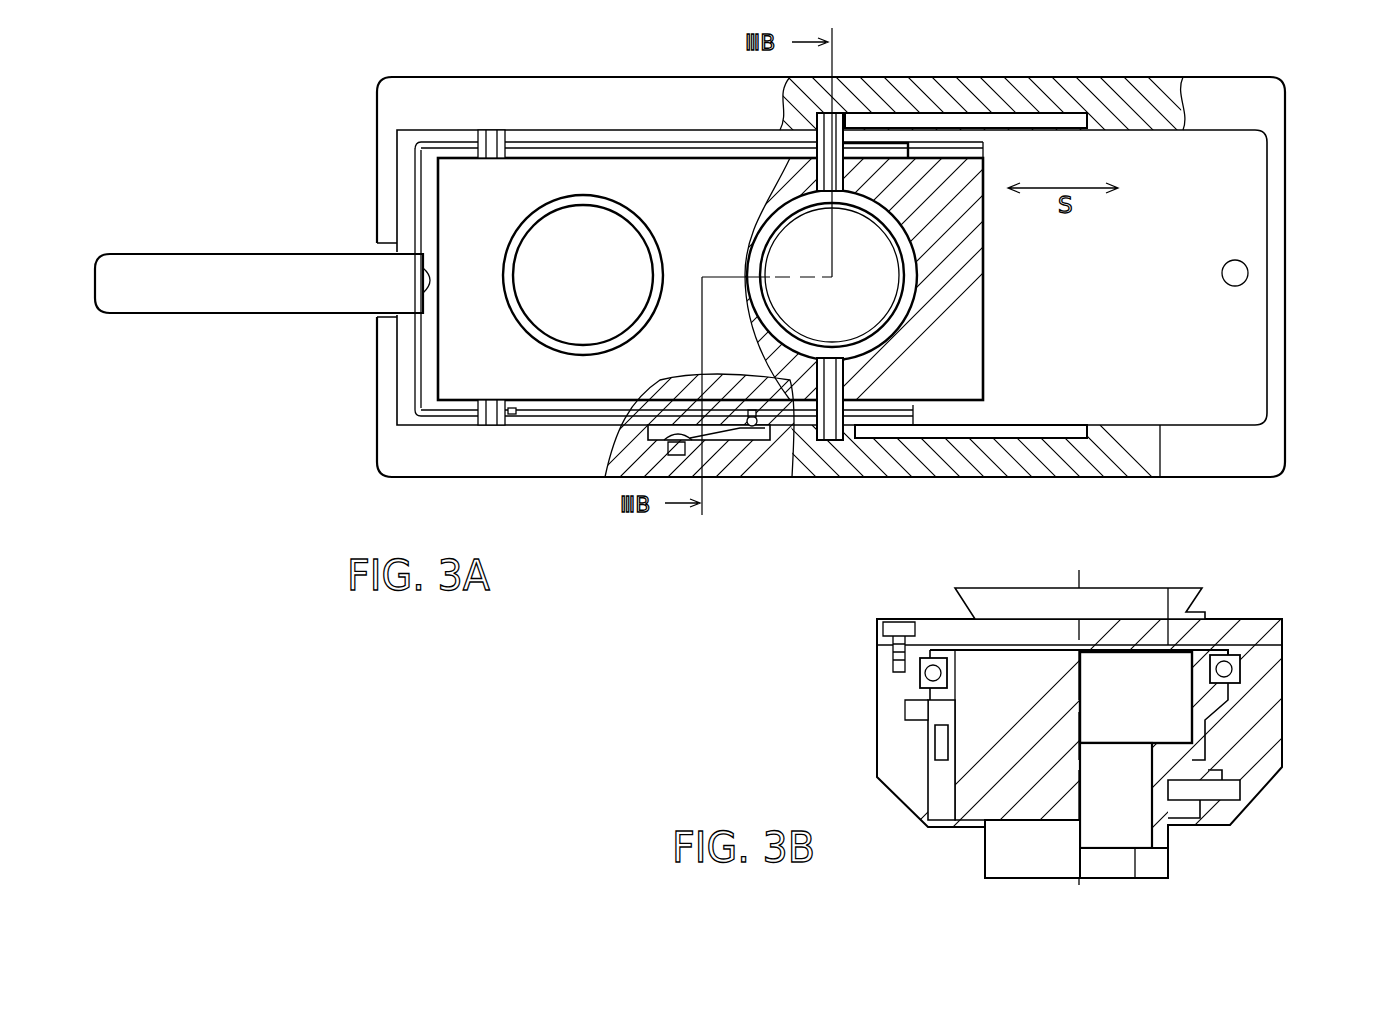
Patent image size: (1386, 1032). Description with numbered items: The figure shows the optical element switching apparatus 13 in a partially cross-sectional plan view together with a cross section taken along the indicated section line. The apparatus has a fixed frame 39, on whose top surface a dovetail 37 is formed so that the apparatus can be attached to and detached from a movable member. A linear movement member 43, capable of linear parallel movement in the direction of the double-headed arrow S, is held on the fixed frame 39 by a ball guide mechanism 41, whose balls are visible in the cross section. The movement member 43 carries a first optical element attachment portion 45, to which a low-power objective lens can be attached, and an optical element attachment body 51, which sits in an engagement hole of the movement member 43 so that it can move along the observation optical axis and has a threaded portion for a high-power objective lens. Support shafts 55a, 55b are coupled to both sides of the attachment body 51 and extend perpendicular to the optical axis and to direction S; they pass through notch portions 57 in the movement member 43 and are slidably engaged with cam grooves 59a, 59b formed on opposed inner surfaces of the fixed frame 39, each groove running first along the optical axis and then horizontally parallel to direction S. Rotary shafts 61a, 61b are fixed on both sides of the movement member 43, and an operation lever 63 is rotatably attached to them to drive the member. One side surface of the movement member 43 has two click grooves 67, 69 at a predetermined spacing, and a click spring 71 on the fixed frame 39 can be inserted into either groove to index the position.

In FIG. 3A, the optical element switching apparatus 13 is at (378, 505).
In FIG. 3B, the dovetail 37 is at (1182, 588).
In FIG. 3A, the fixed frame 39 is at (376, 393).
In FIG. 3B, the fixed frame 39 is at (1285, 628).
In FIG. 3B, the ball guide mechanism 41 is at (969, 665).
In FIG. 3A, the linear movement member 43 is at (985, 338).
In FIG. 3B, the linear movement member 43 is at (1025, 826).
In FIG. 3A, the first optical element attachment portion 45 is at (515, 215).
In FIG. 3A, the optical element attachment body 51 is at (918, 260).
In FIG. 3B, the optical element attachment body 51 is at (1126, 743).
In FIG. 3A, the support shaft 55a is at (840, 140).
In FIG. 3A, the support shaft 55b is at (856, 440).
In FIG. 3A, the notch portions 57 is at (815, 176).
In FIG. 3A, the cam groove 59a is at (1043, 118).
In FIG. 3A, the cam groove 59b is at (1066, 425).
In FIG. 3A, the rotary shaft 61a is at (487, 130).
In FIG. 3A, the rotary shaft 61b is at (487, 425).
In FIG. 3A, the operation lever 63 is at (235, 254).
In FIG. 3A, the click groove 67 is at (511, 408).
In FIG. 3A, the click groove 69 is at (750, 414).
In FIG. 3A, the click spring 71 is at (735, 441).